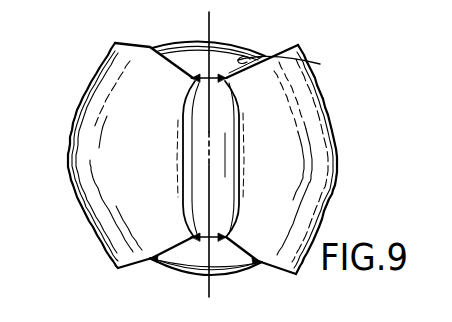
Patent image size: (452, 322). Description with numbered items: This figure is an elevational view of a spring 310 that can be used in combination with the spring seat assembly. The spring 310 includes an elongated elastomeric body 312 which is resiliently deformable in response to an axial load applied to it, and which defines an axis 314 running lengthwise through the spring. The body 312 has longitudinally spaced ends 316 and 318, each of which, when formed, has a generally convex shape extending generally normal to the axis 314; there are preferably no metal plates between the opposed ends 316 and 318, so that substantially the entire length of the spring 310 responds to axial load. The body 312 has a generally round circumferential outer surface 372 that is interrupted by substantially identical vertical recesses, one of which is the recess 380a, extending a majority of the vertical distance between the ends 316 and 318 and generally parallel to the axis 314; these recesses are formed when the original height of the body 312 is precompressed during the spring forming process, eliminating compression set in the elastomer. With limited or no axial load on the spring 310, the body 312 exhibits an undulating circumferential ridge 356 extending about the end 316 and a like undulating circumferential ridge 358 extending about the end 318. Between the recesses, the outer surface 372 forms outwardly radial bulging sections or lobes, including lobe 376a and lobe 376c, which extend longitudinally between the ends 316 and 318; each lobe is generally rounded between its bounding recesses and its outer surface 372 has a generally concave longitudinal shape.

The spring 310 is at (144, 34).
The elongated elastomeric body 312 is at (88, 128).
The axis 314 is at (211, 20).
The end 316 is at (297, 45).
The undulating circumferential ridge 356 is at (296, 60).
The undulating circumferential ridge 358 is at (254, 264).
The end 318 is at (154, 262).
The circumferential outer surface 372 is at (78, 206).
The outwardly radial bulging section or lobe 376a is at (324, 169).
The outwardly radial bulging section or lobe 376c is at (88, 164).
The vertical interruption or recess 380a is at (234, 210).